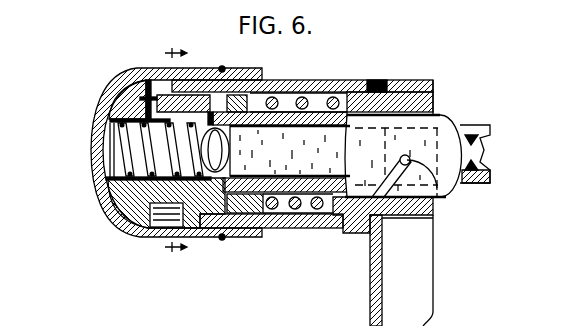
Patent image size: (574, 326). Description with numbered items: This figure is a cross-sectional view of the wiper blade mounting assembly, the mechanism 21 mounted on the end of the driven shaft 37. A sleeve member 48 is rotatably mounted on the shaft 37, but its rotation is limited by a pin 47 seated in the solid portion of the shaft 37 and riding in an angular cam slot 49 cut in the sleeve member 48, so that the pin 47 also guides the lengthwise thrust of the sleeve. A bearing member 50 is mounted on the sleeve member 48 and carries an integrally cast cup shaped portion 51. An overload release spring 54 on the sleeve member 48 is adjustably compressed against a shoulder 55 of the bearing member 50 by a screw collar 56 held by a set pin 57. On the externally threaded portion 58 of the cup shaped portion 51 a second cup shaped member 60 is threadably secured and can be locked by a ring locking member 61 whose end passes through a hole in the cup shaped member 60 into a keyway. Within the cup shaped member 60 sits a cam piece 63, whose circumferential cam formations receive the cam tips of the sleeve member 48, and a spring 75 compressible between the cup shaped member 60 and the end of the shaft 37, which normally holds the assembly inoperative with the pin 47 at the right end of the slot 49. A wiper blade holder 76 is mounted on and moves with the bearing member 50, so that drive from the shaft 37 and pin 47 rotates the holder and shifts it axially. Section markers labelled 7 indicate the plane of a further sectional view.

The mechanism 21 is at (267, 179).
The shaft 37 is at (486, 147).
The pin 47 is at (440, 200).
The sleeve member 48 is at (443, 130).
The angular cam slot 49 is at (380, 163).
The bearing member 50 is at (367, 82).
The cup shaped portion 51 is at (292, 82).
The overload release spring 54 is at (318, 230).
The shoulder 55 is at (356, 232).
The screw collar 56 is at (265, 235).
The set pin 57 is at (230, 95).
The externally threaded portion 58 is at (203, 240).
The cup shaped member 60 is at (101, 184).
The ring locking member 61 is at (222, 66).
The cam piece 63 is at (127, 225).
The spring 75 is at (112, 121).
The wiper blade holder 76 is at (370, 305).
The section line 7- 7 is at (188, 149).